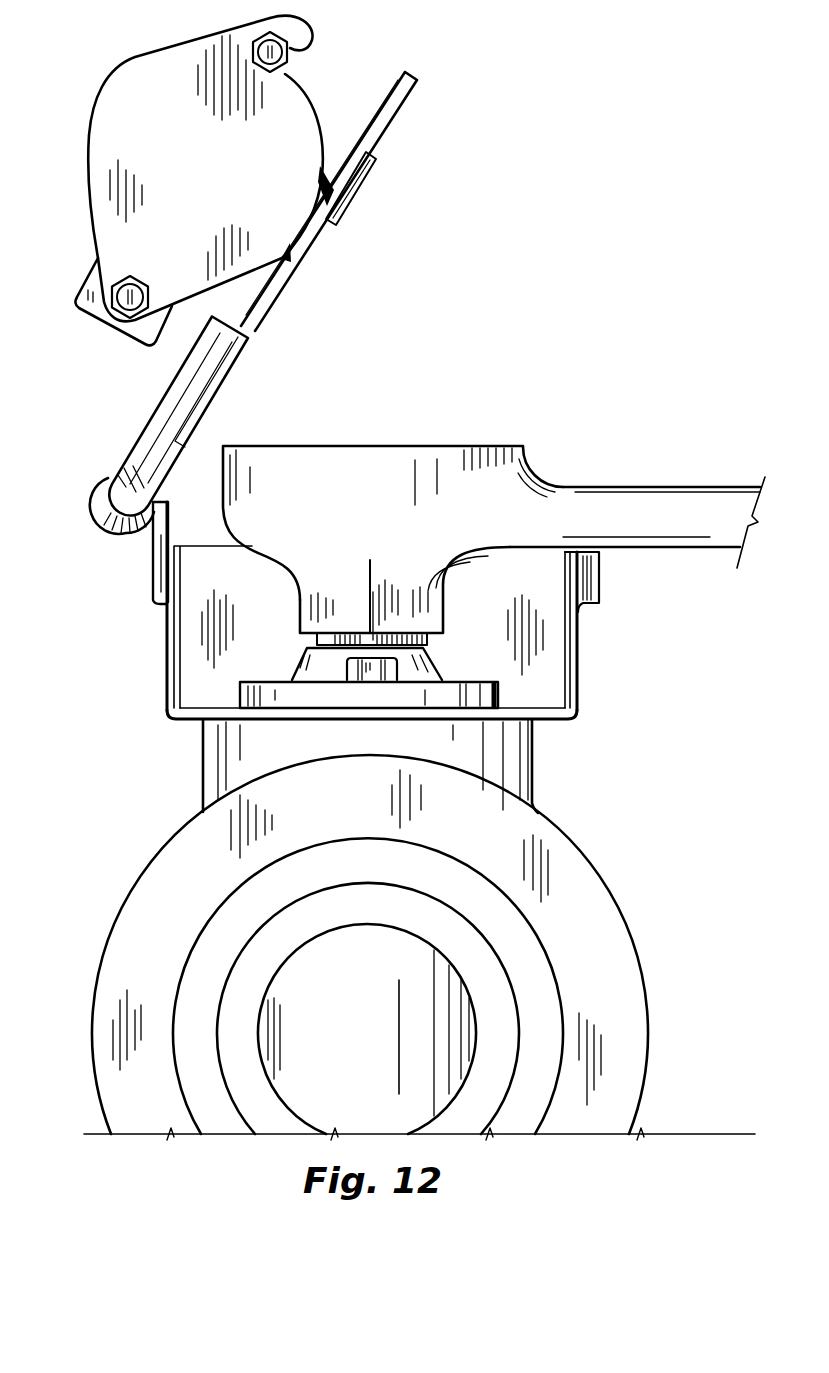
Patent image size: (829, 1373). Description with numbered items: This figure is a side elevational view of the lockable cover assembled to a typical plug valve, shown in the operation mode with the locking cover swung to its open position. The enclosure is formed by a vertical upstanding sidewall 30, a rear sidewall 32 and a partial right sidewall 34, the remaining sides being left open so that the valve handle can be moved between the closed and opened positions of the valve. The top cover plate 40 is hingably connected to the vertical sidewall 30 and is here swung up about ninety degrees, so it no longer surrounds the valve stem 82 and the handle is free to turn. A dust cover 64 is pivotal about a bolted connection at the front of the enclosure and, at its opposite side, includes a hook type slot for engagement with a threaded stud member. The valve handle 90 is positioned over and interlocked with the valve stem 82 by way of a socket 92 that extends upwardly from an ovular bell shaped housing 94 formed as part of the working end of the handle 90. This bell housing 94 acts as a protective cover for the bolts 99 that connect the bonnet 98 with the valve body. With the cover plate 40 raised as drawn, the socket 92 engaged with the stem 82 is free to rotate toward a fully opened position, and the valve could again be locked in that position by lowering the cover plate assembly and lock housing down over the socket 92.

The vertical upstanding sidewall 30 is at (166, 666).
The rear sidewall 32 is at (468, 598).
The partial right sidewall 34 is at (578, 665).
The top cover plate 40 is at (295, 271).
The dust cover 64 is at (207, 195).
The valve stem 82 is at (314, 641).
The valve handle 90 is at (645, 487).
The socket 92 is at (298, 602).
The bell shaped housing 94 is at (223, 470).
The bonnet 98 is at (500, 697).
The bolts 99 is at (400, 671).